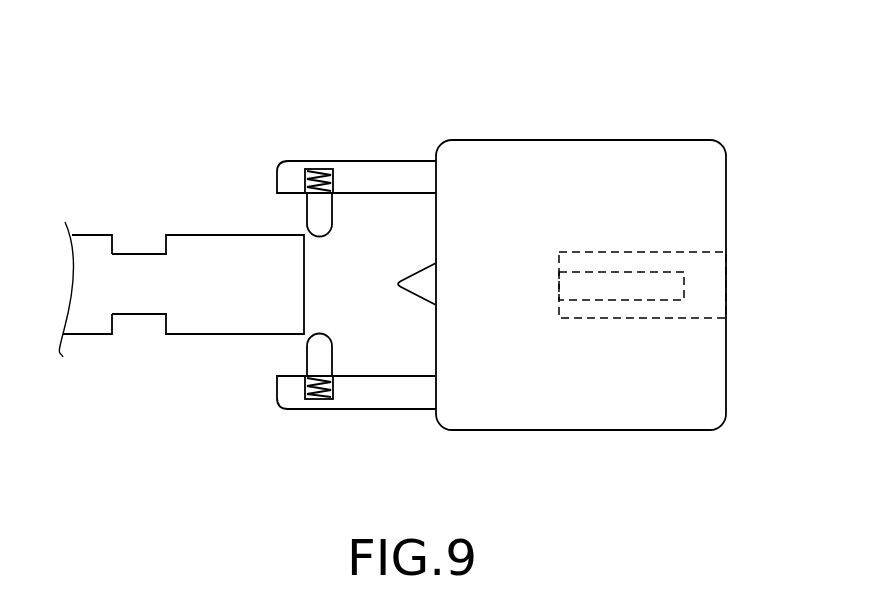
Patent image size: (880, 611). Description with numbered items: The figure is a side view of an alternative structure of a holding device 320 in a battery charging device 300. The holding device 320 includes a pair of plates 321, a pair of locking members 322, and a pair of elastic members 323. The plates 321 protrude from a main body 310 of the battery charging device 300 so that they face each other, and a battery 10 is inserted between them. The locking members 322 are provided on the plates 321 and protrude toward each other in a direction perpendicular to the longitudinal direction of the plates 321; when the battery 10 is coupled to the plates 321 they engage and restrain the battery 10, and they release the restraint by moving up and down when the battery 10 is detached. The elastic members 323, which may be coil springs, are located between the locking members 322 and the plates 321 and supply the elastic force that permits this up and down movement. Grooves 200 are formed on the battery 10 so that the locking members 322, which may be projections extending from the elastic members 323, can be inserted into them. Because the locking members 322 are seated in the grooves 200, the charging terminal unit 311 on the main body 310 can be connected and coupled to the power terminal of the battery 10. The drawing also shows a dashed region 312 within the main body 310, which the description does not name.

The battery 10 is at (89, 232).
The grooves 200 is at (137, 253).
The battery charging device 300 is at (607, 247).
The main body 310 is at (539, 158).
The charging terminal unit 311 is at (422, 287).
The receiving slot 312 is at (715, 287).
The holding device 320 is at (312, 222).
The plates 321 is at (285, 172).
The locking members 322 is at (313, 209).
The elastic members 323 is at (317, 175).